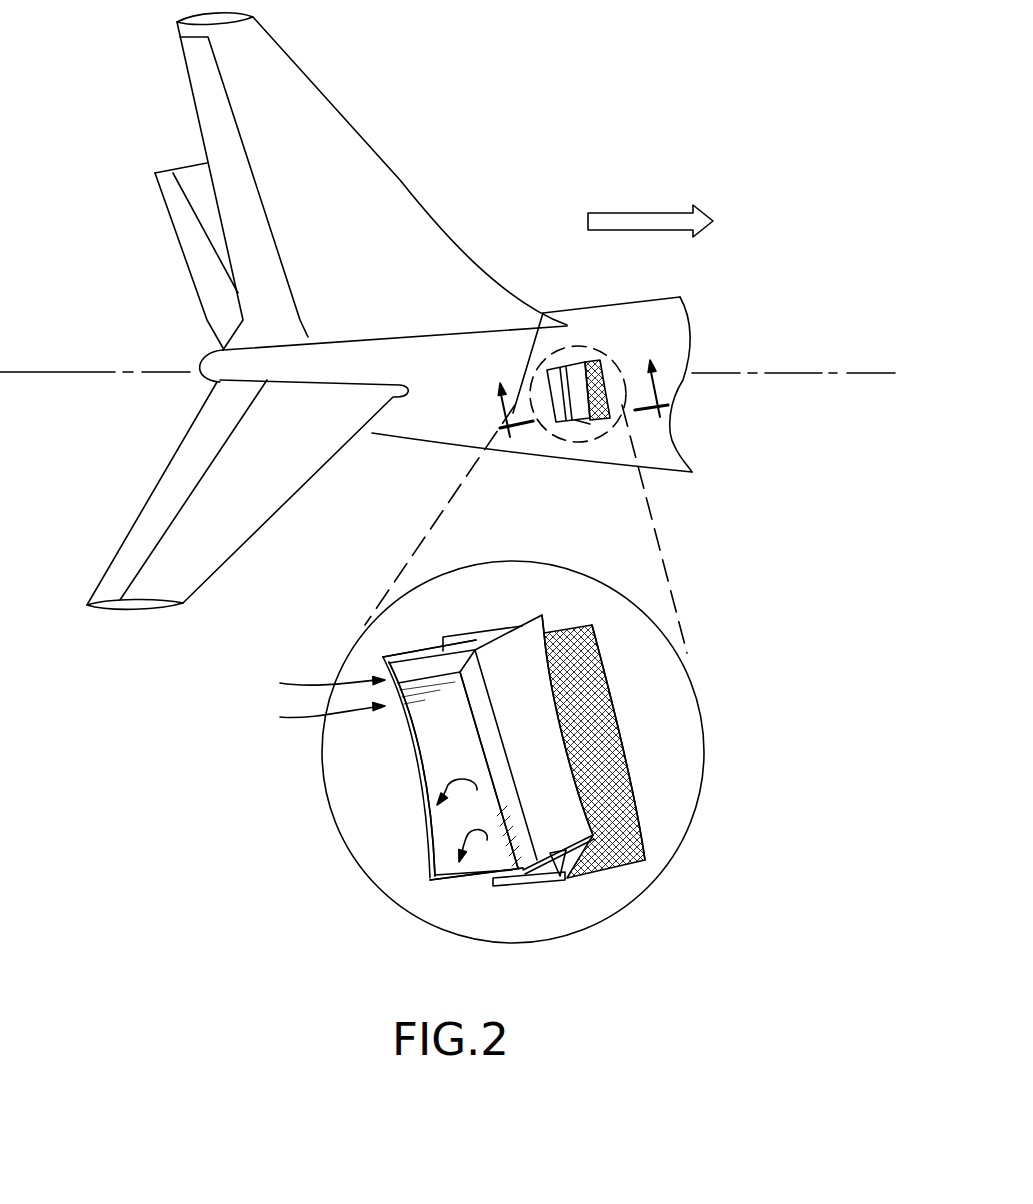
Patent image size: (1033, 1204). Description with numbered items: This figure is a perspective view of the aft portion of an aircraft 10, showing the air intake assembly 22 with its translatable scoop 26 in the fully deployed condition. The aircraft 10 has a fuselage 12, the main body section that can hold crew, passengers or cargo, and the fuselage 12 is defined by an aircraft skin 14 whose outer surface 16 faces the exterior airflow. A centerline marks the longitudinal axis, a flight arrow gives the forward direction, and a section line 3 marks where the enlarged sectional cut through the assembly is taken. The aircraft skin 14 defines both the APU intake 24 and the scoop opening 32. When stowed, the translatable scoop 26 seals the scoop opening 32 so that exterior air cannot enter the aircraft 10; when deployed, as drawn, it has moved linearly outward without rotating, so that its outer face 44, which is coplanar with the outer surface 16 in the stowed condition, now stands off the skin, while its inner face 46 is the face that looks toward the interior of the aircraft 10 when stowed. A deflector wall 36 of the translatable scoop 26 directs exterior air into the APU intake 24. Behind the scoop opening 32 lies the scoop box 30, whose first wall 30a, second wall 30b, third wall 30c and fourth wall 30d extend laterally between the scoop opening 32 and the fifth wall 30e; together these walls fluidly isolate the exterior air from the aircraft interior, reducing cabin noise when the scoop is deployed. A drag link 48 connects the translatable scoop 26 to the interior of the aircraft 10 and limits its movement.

The aircraft 10 is at (580, 135).
The fuselage 12 is at (647, 297).
The aircraft skin 14 is at (675, 320).
The outer surface 16 is at (652, 677).
The air intake assembly 22 is at (570, 898).
The auxiliary power unit intake 24 is at (638, 783).
The translatable scoop 26 is at (533, 628).
The scoop box 30 is at (318, 682).
The first wall 30a is at (473, 702).
The second wall 30b is at (433, 813).
The third wall 30c is at (482, 870).
The fourth wall 30d is at (410, 664).
The fifth wall 30e is at (425, 719).
The scoop opening 32 is at (318, 716).
The deflector wall 36 is at (553, 800).
The outer face 44 is at (503, 645).
The inner face 46 is at (558, 619).
The drag link 48 is at (560, 860).
The section line 3- 3 is at (572, 388).